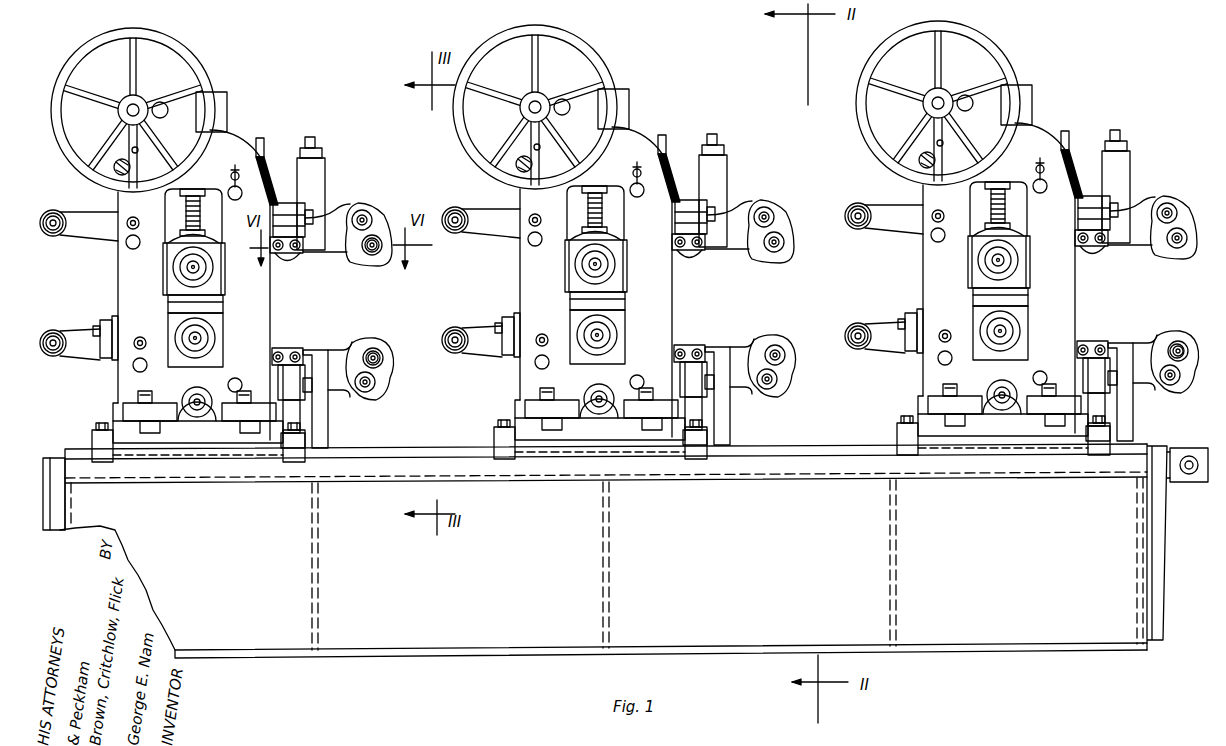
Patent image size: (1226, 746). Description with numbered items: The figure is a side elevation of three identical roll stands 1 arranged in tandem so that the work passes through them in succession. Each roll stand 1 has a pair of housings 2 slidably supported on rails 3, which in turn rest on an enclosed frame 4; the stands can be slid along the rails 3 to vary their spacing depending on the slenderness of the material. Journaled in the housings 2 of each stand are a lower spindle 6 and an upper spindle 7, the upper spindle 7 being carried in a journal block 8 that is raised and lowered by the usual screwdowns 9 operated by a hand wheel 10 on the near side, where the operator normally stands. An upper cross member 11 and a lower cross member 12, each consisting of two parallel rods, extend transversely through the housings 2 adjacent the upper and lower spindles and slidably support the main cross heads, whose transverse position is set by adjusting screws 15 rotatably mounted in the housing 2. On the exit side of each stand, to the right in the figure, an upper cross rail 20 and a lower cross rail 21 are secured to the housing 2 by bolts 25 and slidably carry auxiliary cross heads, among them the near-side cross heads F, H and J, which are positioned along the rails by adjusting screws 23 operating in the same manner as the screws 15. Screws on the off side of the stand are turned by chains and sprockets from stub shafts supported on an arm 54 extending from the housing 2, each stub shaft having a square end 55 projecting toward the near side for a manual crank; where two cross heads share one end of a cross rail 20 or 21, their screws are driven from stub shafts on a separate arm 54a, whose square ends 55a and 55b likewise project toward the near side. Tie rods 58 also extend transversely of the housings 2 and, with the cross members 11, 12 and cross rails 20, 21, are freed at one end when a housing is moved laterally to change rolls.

The roll stand 1 is at (112, 277).
The housing 2 is at (237, 142).
The rail 3 is at (405, 458).
The enclosed frame 4 is at (1172, 528).
The lower spindle 6 is at (198, 339).
The upper spindle 7 is at (198, 266).
The journal block 8 is at (225, 286).
The screwdowns 9 is at (208, 212).
The hand wheel 10 is at (200, 72).
The upper cross member 11 is at (242, 196).
The lower cross member 12 is at (145, 372).
The adjusting screw 15 is at (143, 203).
The upper cross rail 20 is at (303, 212).
The lower cross rail 21 is at (300, 402).
The adjusting screw 23 is at (277, 260).
The bolt 25 is at (345, 208).
The arm 54 is at (88, 212).
The arm 54a is at (343, 258).
The square end 55 is at (57, 237).
The square end 55a is at (372, 216).
The square end 55b is at (386, 265).
The tie rod 58 is at (122, 167).
The auxiliary cross head F is at (323, 170).
The auxiliary cross head H is at (330, 437).
The auxiliary cross head J is at (268, 165).